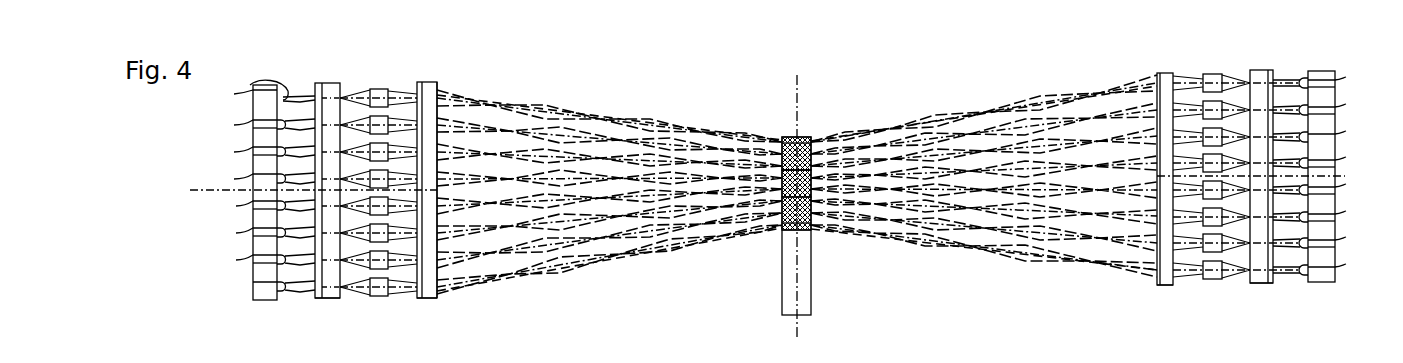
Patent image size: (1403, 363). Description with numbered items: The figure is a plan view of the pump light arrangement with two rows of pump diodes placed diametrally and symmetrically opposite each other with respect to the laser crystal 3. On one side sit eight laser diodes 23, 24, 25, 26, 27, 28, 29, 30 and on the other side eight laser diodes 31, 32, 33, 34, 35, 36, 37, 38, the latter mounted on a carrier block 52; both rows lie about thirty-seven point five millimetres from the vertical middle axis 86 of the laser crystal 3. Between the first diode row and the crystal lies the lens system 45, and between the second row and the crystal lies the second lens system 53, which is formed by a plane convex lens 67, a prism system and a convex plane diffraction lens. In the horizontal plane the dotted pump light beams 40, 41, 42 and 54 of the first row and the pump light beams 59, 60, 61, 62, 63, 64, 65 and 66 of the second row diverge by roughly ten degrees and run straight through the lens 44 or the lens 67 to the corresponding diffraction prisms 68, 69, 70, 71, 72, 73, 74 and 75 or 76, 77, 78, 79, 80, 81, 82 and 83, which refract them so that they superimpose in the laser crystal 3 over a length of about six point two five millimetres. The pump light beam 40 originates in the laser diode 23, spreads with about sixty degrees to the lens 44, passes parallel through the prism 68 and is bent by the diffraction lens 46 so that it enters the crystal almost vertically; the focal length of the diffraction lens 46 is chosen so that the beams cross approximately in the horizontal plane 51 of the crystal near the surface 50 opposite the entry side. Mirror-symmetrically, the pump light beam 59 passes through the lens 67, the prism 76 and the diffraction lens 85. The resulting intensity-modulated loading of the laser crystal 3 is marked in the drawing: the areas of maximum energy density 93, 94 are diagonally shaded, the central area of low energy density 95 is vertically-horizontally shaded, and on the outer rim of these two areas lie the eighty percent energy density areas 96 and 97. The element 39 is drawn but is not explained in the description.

The laser crystal 3 is at (806, 295).
The laser diode 23 is at (253, 298).
The laser diode 24 is at (265, 260).
The laser diode 25 is at (265, 233).
The laser diode 26 is at (265, 206).
The laser diode 27 is at (263, 179).
The laser diode 28 is at (263, 152).
The laser diode 29 is at (263, 125).
The laser diode 30 is at (263, 95).
The laser diode 31 is at (1332, 267).
The laser diode 32 is at (1332, 240).
The laser diode 33 is at (1332, 213).
The laser diode 34 is at (1332, 187).
The laser diode 35 is at (1332, 160).
The laser diode 36 is at (1332, 133).
The laser diode 37 is at (1332, 107).
The laser diode 38 is at (1332, 80).
The fiber end region 39 is at (262, 105).
The pump light beam 40 is at (302, 292).
The pump light beam 41 is at (253, 209).
The pump light beam 42 is at (310, 97).
The lens 44 is at (307, 288).
The lens system 45 is at (370, 198).
The diffraction lens 46 is at (437, 296).
The surface 50 is at (253, 263).
The horizontal plain 51 is at (253, 236).
The carrier block 52 is at (778, 119).
The second lens system 53 is at (253, 155).
The pump light beam 54 is at (253, 128).
The pump light beam 59 is at (1288, 273).
The pump light beam 60 is at (1335, 247).
The pump light beam 61 is at (1335, 221).
The pump light beam 62 is at (1335, 194).
The pump light beam 63 is at (1335, 167).
The pump light beam 64 is at (1335, 114).
The pump light beam 65 is at (1335, 87).
The pump light beam 66 is at (1284, 83).
The plane convex lens 67 is at (1262, 285).
The diffraction prism 68 is at (372, 294).
The diffraction prism 69 is at (380, 262).
The diffraction prism 70 is at (383, 200).
The diffraction prism 71 is at (418, 297).
The diffraction prism 72 is at (422, 118).
The diffraction prism 73 is at (392, 166).
The diffraction prism 74 is at (387, 118).
The diffraction prism 75 is at (373, 92).
The diffraction prisma 76 is at (1210, 250).
The diffraction prisma 77 is at (1208, 222).
The diffraction prisma 78 is at (1213, 192).
The diffraction prisma 79 is at (1158, 265).
The diffraction prisma 80 is at (1208, 160).
The diffraction prisma 81 is at (1216, 138).
The diffraction prisma 82 is at (1208, 103).
The diffraction prisma 83 is at (1209, 82).
The diffraction lens 85 is at (1157, 80).
The vertical middle axis 86 is at (802, 82).
The area of maximum energy density 93 is at (813, 143).
The area of maximum energy density 94 is at (813, 226).
The central area of low energy density 95 is at (784, 197).
The 80% energy density area 96 is at (786, 233).
The 80% energy density area 97 is at (788, 137).